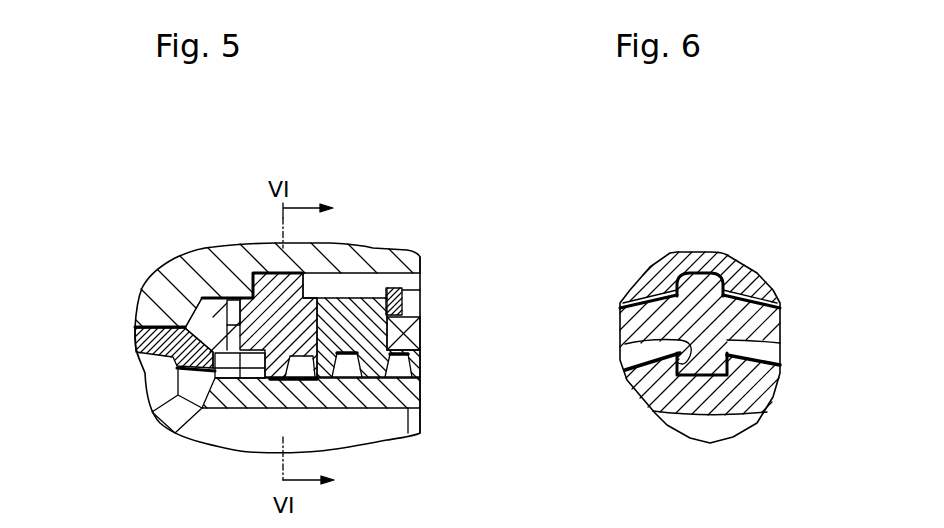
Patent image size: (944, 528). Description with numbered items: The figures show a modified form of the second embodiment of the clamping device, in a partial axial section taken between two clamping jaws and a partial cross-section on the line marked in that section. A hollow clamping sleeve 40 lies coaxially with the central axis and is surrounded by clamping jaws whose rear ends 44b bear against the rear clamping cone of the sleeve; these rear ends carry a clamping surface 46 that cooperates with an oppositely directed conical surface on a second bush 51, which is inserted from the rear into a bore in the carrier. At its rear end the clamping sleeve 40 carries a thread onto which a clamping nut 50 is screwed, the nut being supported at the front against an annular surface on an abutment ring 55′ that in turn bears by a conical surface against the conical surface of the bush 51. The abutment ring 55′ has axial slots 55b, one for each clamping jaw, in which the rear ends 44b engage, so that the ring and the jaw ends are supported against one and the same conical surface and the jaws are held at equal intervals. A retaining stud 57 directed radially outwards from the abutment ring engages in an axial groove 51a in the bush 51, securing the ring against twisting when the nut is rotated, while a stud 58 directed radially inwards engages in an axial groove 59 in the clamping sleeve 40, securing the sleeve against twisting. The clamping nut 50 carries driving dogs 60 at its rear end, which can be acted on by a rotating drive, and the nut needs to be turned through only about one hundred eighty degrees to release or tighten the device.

In FIG. 5, the clamping sleeve 40 is at (390, 393).
In FIG. 6, the clamping sleeve 40 is at (662, 385).
In FIG. 5, the rear ends of clamping jaws 44b is at (175, 355).
In FIG. 5, the clamping surface 46 is at (187, 323).
In FIG. 5, the clamping nut 50 is at (335, 310).
In FIG. 5, the second bush 51 is at (390, 260).
In FIG. 5, the axial groove 51a is at (362, 277).
In FIG. 6, the axial groove 51a is at (723, 287).
In FIG. 5, the axial slots 55b is at (197, 298).
In FIG. 6, the abutment ring 55′ is at (762, 313).
In FIG. 5, the retaining stud 57 is at (285, 283).
In FIG. 6, the retaining stud 57 is at (703, 285).
In FIG. 5, the stud 58 is at (273, 377).
In FIG. 6, the stud 58 is at (725, 339).
In FIG. 6, the axial groove 59 is at (683, 347).
In FIG. 5, the driving dogs 60 is at (392, 333).